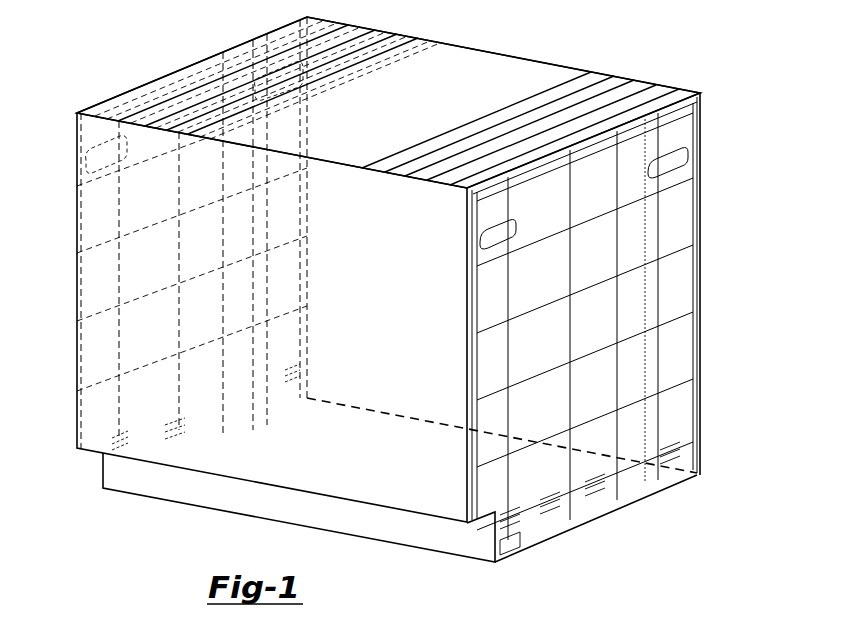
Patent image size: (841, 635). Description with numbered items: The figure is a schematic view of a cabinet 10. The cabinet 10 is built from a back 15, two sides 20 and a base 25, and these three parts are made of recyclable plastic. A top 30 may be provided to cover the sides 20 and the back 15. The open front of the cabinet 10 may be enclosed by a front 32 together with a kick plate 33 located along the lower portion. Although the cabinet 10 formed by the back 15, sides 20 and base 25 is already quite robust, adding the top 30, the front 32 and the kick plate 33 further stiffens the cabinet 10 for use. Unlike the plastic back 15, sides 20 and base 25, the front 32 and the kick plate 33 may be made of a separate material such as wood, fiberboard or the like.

The cabinet 10 is at (688, 60).
The back 15 is at (500, 50).
The sides 20 is at (100, 292).
The base 25 is at (375, 467).
The top 30 is at (194, 82).
The front 32 is at (408, 343).
The kick plate 33 is at (415, 535).